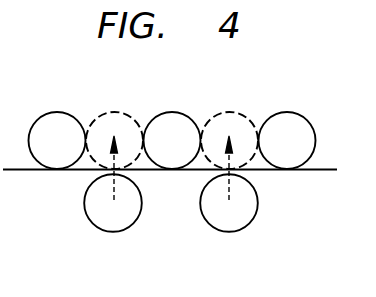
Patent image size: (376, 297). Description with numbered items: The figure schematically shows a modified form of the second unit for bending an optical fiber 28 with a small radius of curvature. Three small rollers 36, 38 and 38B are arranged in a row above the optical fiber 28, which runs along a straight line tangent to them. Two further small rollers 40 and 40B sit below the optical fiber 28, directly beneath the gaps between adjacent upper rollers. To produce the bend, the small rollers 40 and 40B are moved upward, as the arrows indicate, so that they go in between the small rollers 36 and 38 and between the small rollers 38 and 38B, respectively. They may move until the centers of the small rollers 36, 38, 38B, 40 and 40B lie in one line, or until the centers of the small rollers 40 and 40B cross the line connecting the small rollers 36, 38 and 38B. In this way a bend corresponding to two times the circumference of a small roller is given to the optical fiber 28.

The optical fiber 28 is at (318, 171).
The small roller 36 is at (58, 111).
The small roller 38 is at (172, 111).
The small roller 38B is at (285, 111).
The small roller 40 is at (112, 232).
The small roller 40B is at (229, 232).